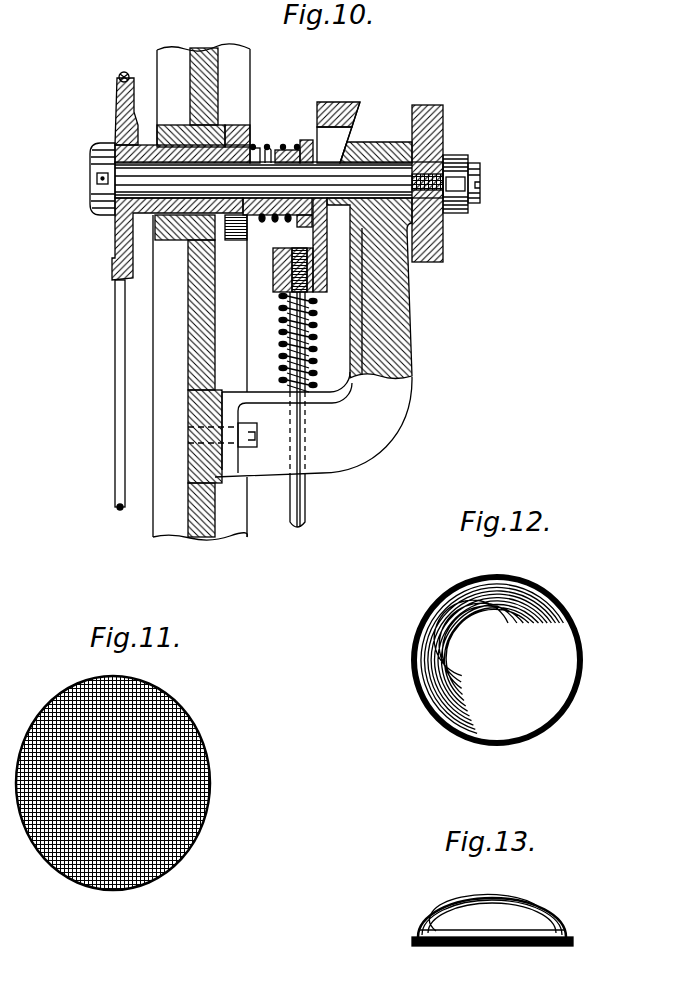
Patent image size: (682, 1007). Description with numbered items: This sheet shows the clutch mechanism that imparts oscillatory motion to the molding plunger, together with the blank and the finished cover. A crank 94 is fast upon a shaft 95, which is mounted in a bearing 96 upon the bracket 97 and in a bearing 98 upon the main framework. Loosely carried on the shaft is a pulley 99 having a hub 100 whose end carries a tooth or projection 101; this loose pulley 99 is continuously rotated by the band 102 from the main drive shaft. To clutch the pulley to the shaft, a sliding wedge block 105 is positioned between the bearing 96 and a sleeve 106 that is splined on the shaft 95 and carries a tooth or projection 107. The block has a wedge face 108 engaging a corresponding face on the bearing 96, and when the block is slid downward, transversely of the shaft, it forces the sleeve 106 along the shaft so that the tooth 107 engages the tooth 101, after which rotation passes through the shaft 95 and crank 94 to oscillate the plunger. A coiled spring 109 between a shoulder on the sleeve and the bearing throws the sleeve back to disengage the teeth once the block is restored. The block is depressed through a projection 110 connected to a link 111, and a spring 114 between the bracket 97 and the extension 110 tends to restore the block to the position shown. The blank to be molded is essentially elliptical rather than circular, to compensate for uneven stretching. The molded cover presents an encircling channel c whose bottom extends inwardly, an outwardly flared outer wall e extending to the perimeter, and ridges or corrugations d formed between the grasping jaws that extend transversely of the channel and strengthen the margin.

In FIG. 10, the crank 94 is at (445, 115).
In FIG. 10, the shaft 95 is at (90, 211).
In FIG. 10, the bearing 96 is at (387, 142).
In FIG. 10, the bracket 97 is at (405, 400).
In FIG. 10, the bearing 98 is at (180, 240).
In FIG. 10, the loose pulley 99 is at (115, 90).
In FIG. 10, the hub 100 is at (128, 152).
In FIG. 10, the tooth or projection 101 is at (255, 148).
In FIG. 10, the band 102 is at (120, 382).
In FIG. 10, the sliding wedge block 105 is at (347, 102).
In FIG. 10, the sleeve 106 is at (335, 165).
In FIG. 10, the tooth or projection 107 is at (268, 218).
In FIG. 10, the wedge face 108 is at (362, 108).
In FIG. 10, the coiled spring 109 is at (283, 147).
In FIG. 10, the projection 110 is at (282, 288).
In FIG. 10, the link 111 is at (292, 355).
In FIG. 10, the spring 114 is at (315, 369).
In FIG. 12, the ridges or ribs or corrugations d is at (563, 707).
In FIG. 13, the ridges or ribs or corrugations d is at (508, 946).
In FIG. 13, the encircling channel c is at (525, 945).
In FIG. 13, the outer wall e is at (488, 945).